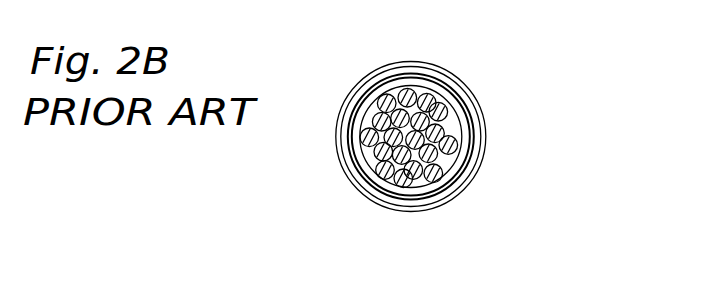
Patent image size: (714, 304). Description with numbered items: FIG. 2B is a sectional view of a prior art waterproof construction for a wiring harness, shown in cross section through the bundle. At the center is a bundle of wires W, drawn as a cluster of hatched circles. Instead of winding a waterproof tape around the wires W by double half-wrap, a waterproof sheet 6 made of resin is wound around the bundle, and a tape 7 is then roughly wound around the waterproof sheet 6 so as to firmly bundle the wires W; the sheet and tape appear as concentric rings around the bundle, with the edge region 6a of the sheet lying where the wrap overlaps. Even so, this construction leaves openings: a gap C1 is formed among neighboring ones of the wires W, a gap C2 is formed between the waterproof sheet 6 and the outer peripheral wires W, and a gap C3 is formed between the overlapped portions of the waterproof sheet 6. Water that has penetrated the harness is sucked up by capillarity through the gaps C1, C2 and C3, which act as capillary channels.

The shield end portion 6a is at (103, 0).
The wires W is at (455, 99).
The tape 7 is at (442, 72).
The waterproof sheet 6 is at (470, 147).
The gap C3 is at (363, 95).
The gap C1 is at (412, 185).
The gap C2 is at (372, 106).